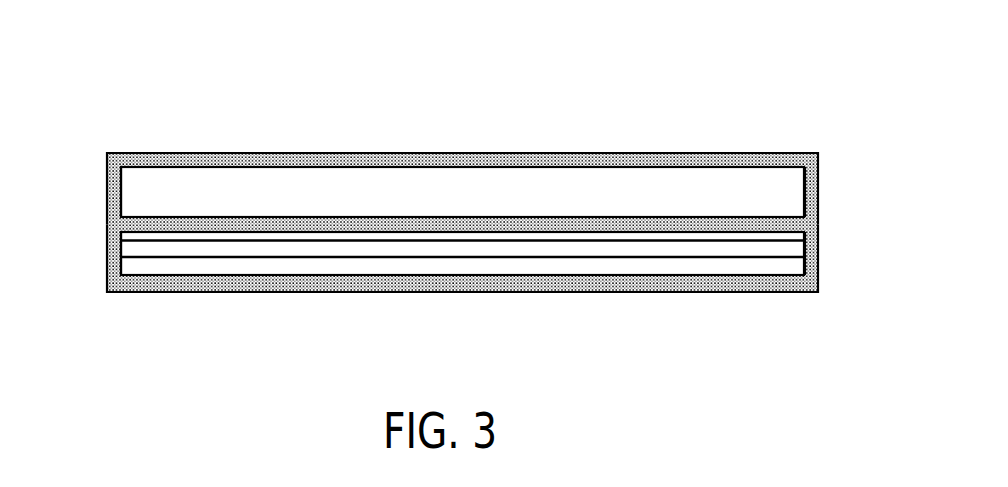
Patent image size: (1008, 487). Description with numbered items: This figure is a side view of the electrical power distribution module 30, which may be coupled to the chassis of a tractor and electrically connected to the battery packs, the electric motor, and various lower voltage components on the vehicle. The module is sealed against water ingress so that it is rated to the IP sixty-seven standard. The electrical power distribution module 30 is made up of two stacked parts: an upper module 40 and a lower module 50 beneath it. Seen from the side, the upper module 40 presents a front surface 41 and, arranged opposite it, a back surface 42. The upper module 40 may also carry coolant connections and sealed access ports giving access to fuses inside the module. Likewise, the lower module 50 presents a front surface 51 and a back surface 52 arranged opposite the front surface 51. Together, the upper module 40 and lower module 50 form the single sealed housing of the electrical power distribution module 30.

The electrical power distribution module 30 is at (463, 204).
The upper module 40 is at (463, 141).
The front surface 41 is at (818, 185).
The back surface 42 is at (107, 189).
The lower module 50 is at (463, 308).
The front surface 51 is at (818, 256).
The back surface 52 is at (107, 253).